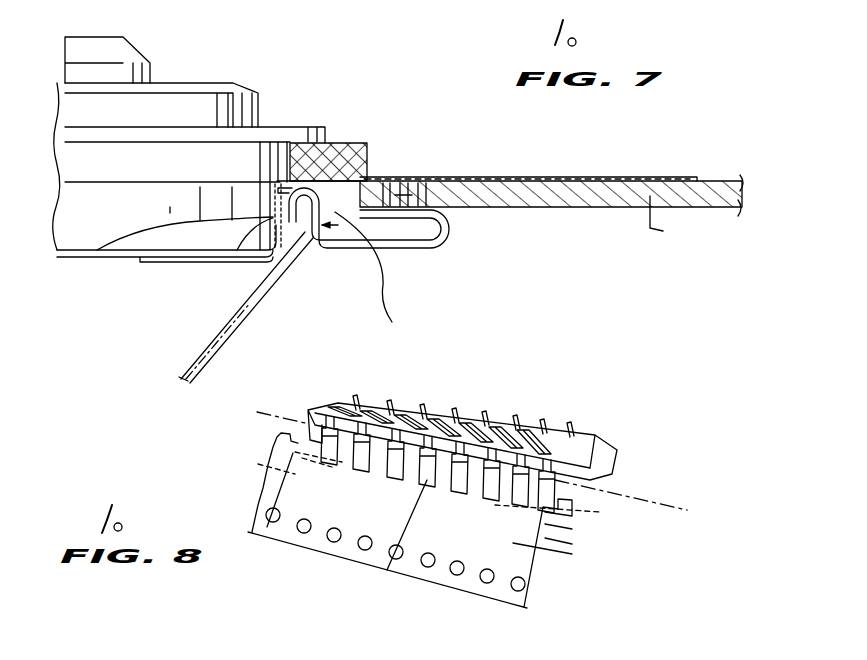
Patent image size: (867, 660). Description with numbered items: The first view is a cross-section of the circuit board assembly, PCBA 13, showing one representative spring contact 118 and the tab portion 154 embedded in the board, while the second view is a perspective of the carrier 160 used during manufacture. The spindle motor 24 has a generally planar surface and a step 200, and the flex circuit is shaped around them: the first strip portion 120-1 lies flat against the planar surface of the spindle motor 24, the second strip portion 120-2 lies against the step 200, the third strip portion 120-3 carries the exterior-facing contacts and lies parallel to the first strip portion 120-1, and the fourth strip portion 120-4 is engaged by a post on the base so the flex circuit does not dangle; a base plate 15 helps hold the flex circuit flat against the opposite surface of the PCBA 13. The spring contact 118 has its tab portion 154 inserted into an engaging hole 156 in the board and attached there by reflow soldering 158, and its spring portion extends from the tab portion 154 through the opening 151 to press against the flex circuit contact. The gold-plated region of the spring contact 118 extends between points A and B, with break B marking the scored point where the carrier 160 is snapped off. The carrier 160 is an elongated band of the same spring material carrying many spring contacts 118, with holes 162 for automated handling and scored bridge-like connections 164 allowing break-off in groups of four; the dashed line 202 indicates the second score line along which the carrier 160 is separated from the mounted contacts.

In FIG. 7, the PCBA 13 is at (670, 218).
In FIG. 7, the base plate 15 is at (332, 143).
In FIG. 7, the spindle motor 24 is at (260, 100).
In FIG. 7, the spring contact 118 is at (420, 253).
In FIG. 8, the spring contact 118 is at (595, 443).
In FIG. 7, the first strip portion 120-1 is at (173, 263).
In FIG. 7, the second strip portion 120-2 is at (272, 232).
In FIG. 7, the third strip portion 120-3 is at (318, 160).
In FIG. 7, the fourth strip portion 120-4 is at (573, 177).
In FIG. 7, the opening 151 is at (375, 279).
In FIG. 7, the tab portion 154 is at (405, 183).
In FIG. 8, the tab portion 154 is at (430, 408).
In FIG. 7, the engaging hole 156 is at (380, 181).
In FIG. 7, the reflow soldering 158 is at (443, 182).
In FIG. 7, the carrier 160 is at (235, 322).
In FIG. 8, the carrier 160 is at (552, 553).
In FIG. 8, the holes 162 is at (450, 572).
In FIG. 8, the bridge-like connections 164 is at (377, 580).
In FIG. 7, the step 200 is at (100, 247).
In FIG. 8, the dashed line 202 is at (633, 497).
In FIG. 7, the point A is at (348, 234).
In FIG. 7, the break B is at (233, 258).